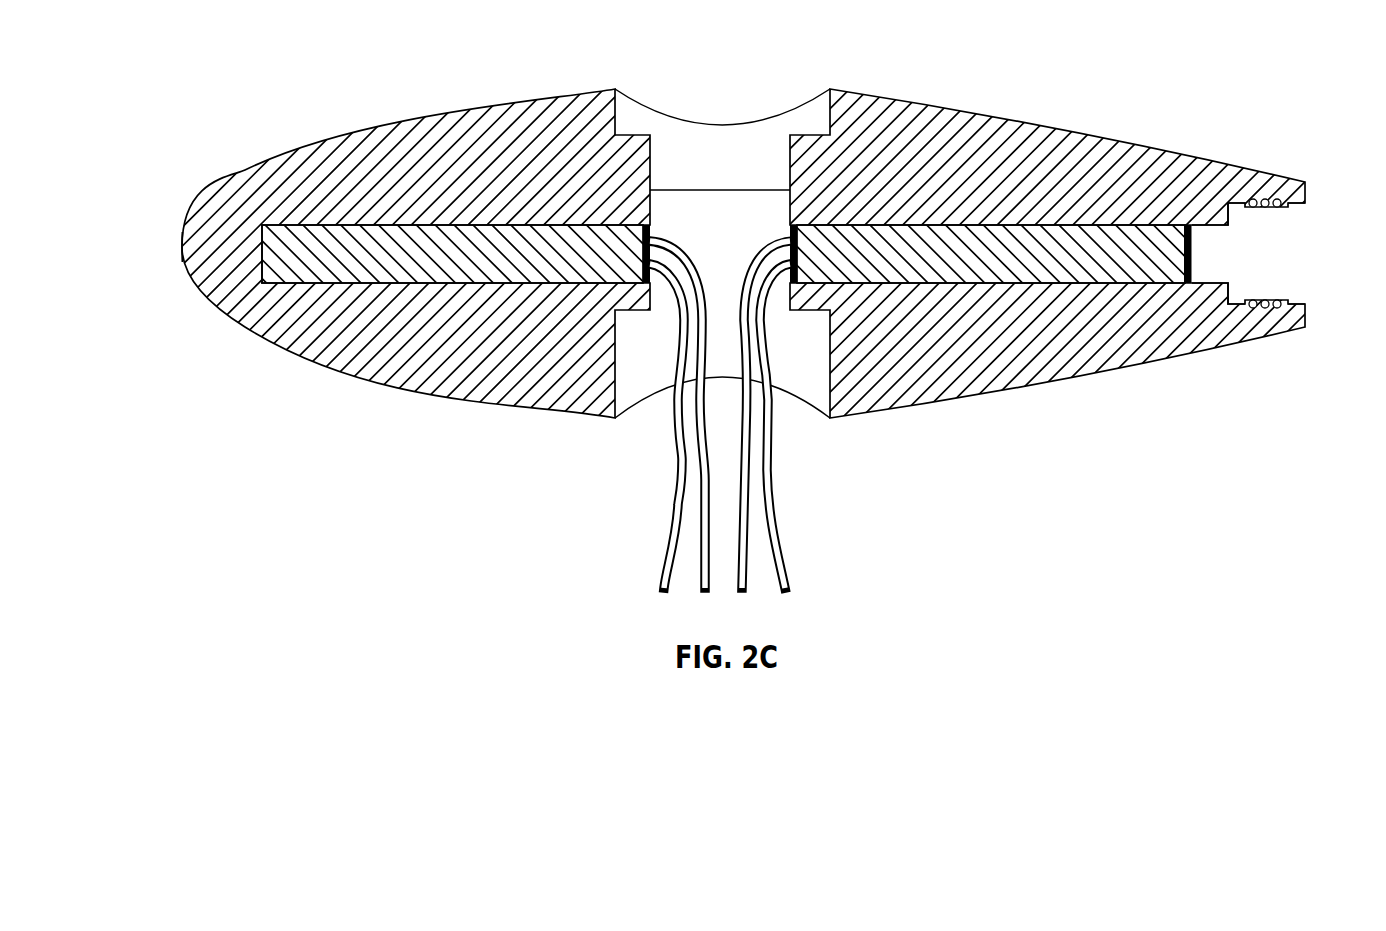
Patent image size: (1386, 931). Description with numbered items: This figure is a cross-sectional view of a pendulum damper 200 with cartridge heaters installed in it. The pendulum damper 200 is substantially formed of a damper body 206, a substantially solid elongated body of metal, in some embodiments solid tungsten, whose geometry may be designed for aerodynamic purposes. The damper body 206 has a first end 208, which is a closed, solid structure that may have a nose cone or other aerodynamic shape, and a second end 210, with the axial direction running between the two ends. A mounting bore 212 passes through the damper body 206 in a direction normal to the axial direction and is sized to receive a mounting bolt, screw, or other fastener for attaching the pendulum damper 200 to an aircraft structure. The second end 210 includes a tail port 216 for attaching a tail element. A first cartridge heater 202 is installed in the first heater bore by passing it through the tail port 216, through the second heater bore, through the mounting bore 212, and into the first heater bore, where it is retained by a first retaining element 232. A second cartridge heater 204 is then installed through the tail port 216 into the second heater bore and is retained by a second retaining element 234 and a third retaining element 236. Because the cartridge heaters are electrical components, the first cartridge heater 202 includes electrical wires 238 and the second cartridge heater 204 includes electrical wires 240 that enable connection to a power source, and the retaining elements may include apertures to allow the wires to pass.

The pendulum damper 200 is at (199, 74).
The first cartridge heater 202 is at (410, 265).
The second cartridge heater 204 is at (1045, 257).
The damper body 206 is at (520, 97).
The first end 208 is at (182, 252).
The second end 210 is at (1307, 315).
The mounting bore 212 is at (776, 139).
The tail port 216 is at (1283, 254).
The first retaining element 232 is at (652, 231).
The second retaining element 234 is at (788, 231).
The third retaining element 236 is at (1182, 225).
The electrical wires 238 is at (677, 505).
The electrical wires 240 is at (773, 483).